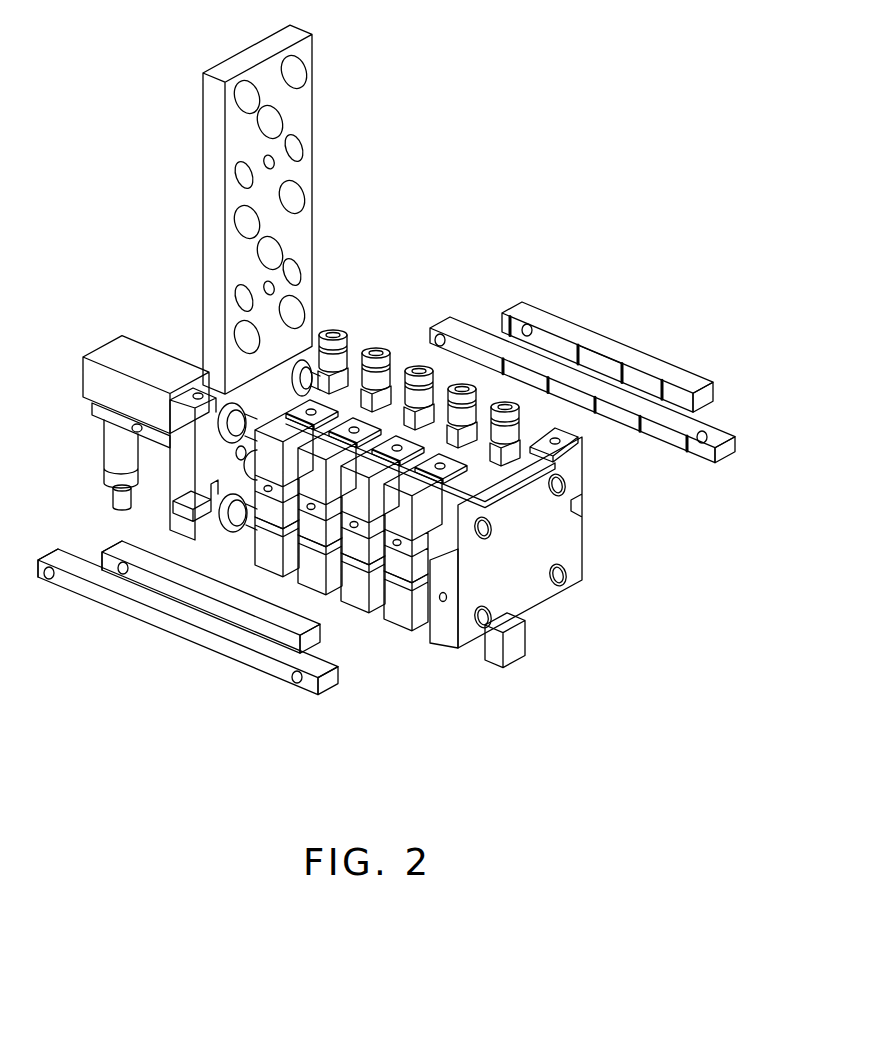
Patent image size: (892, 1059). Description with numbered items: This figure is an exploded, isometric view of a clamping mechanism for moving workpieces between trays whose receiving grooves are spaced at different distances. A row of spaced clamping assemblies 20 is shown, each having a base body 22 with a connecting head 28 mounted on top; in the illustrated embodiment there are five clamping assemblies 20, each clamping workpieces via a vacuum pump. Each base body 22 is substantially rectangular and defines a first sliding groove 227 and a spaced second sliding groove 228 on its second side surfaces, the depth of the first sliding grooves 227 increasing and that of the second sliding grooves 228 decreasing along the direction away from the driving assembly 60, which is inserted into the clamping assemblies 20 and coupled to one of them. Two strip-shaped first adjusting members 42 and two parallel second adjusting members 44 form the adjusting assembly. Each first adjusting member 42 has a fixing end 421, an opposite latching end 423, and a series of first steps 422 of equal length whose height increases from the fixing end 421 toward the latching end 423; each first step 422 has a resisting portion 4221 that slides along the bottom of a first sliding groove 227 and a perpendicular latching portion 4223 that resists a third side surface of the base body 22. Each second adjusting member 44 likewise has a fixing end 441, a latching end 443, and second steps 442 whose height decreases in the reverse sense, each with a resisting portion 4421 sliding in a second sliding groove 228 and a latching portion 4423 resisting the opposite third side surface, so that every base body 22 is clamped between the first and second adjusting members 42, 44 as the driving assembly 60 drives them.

The clamping assembly 20 is at (431, 515).
The base body 22 is at (567, 548).
The first sliding groove 227 is at (458, 563).
The second sliding groove 228 is at (413, 597).
The connecting head 28 is at (348, 336).
The first adjusting member 42 is at (207, 585).
The fixing end 421 is at (117, 545).
The first step 422 is at (611, 342).
The resisting portion 4221 is at (558, 340).
The latching portion 4223 is at (580, 352).
The latching end 423 is at (312, 636).
The second adjusting member 44 is at (182, 633).
The fixing end 441 is at (70, 582).
The second step 442 is at (619, 444).
The resisting portion 4421 is at (683, 428).
The latching portion 4423 is at (640, 423).
The latching end 443 is at (325, 688).
The driving assembly 60 is at (152, 356).